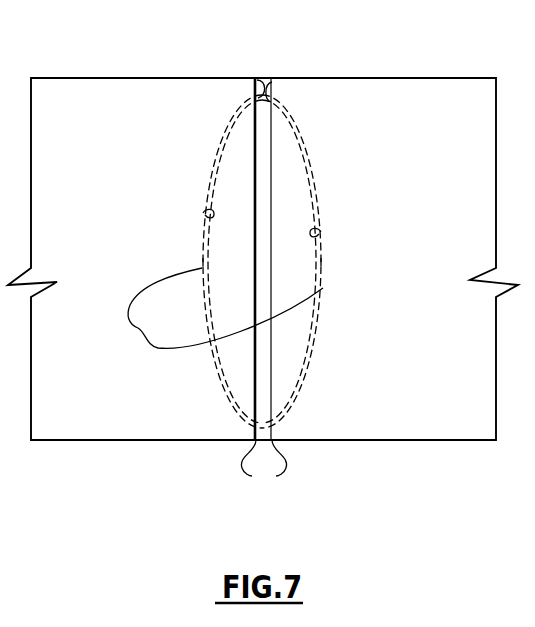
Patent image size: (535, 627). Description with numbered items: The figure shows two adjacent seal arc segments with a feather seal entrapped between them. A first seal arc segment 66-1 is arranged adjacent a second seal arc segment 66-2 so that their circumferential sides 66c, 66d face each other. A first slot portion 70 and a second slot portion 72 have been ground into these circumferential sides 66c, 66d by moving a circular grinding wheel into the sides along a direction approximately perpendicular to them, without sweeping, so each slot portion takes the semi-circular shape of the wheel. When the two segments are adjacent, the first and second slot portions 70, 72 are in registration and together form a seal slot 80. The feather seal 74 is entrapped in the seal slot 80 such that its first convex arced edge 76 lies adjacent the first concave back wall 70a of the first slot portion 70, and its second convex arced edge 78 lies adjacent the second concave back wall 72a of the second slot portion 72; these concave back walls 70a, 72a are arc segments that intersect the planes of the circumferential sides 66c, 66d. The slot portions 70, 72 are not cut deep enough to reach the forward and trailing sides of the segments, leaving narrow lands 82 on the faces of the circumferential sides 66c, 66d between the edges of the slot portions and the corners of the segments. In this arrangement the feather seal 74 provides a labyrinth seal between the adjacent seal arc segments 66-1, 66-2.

The first seal arc segment 66-1 is at (151, 88).
The second seal arc segment 66-2 is at (368, 88).
The circumferential side 66c is at (256, 128).
The circumferential side 66d is at (272, 112).
The first slot portion 70 is at (214, 398).
The first concave back wall 70a is at (205, 213).
The second slot portion 72 is at (320, 383).
The second concave back wall 72a is at (320, 232).
The feather seal 74 is at (252, 418).
The first convex arced edge 76 is at (203, 262).
The second convex arced edge 78 is at (321, 262).
The seal slot 80 is at (138, 328).
The narrow lands 82 is at (272, 82).